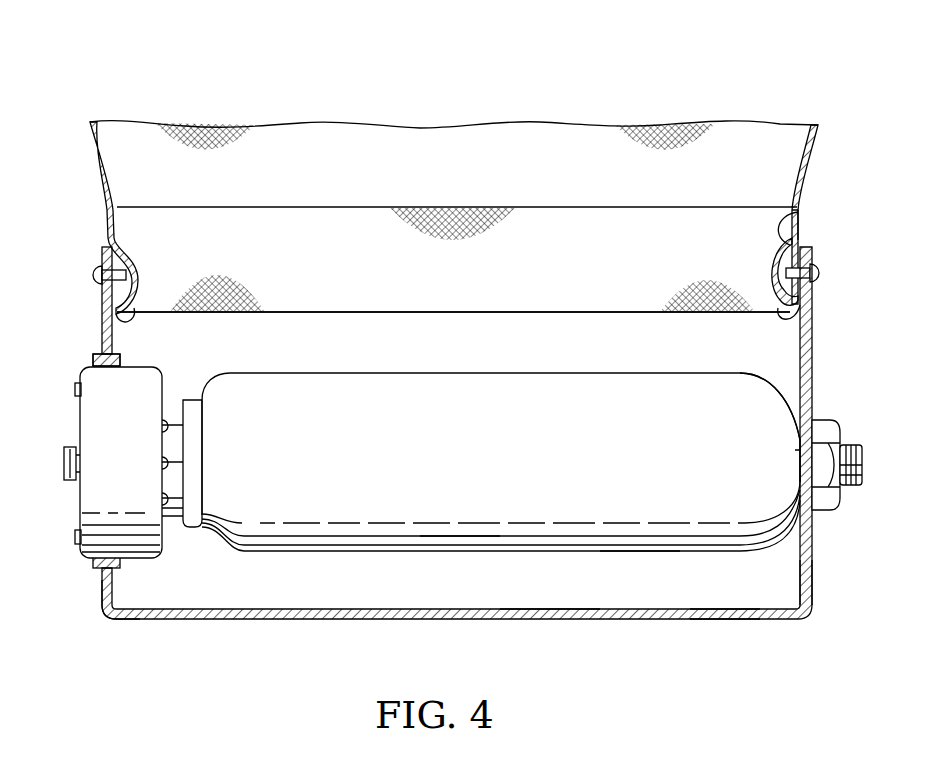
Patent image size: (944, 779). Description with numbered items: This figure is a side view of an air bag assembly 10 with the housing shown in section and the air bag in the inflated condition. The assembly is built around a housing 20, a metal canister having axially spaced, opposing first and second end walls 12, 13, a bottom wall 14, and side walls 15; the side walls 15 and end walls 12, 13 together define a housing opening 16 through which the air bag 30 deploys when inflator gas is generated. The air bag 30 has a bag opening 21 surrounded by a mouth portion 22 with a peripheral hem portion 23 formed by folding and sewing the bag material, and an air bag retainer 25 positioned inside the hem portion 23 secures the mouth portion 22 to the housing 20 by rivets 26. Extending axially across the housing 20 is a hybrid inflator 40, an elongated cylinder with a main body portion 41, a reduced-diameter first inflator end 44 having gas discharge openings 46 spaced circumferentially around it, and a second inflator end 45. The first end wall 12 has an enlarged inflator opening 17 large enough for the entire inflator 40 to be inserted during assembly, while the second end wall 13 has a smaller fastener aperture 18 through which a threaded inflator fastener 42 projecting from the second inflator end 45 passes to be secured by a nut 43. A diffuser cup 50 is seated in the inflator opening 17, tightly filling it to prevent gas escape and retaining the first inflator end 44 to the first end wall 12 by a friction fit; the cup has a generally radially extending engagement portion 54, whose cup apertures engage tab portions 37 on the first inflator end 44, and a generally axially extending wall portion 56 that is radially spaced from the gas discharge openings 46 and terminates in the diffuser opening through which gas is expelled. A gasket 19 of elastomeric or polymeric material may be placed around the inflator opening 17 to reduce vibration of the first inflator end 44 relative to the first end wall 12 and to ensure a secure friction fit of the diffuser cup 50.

The air bag assembly 10 is at (557, 98).
The first end wall 12 is at (103, 600).
The second end wall 13 is at (808, 582).
The bottom wall 14 is at (697, 620).
The side walls 15 is at (544, 592).
The housing opening 16 is at (805, 210).
The inflator opening 17 is at (119, 360).
The fastener aperture 18 is at (800, 452).
The gasket 19 is at (113, 352).
The housing 20 is at (255, 625).
The bag opening 21 is at (790, 316).
The mouth portion 22 is at (470, 312).
The hem portion 23 is at (383, 313).
The air bag retainer 25 is at (800, 266).
The rivets 26 is at (817, 271).
The air bag 30 is at (316, 128).
The tab portions 37 is at (78, 386).
The hybrid inflator 40 is at (637, 556).
The main body portion 41 is at (458, 540).
The inflator fastener 42 is at (851, 446).
The nut 43 is at (823, 420).
The first inflator end 44 is at (199, 412).
The second inflator end 45 is at (770, 410).
The gas discharge openings 46 is at (172, 498).
The diffuser cup 50 is at (84, 562).
The engagement portion 54 is at (76, 427).
The wall portion 56 is at (100, 410).